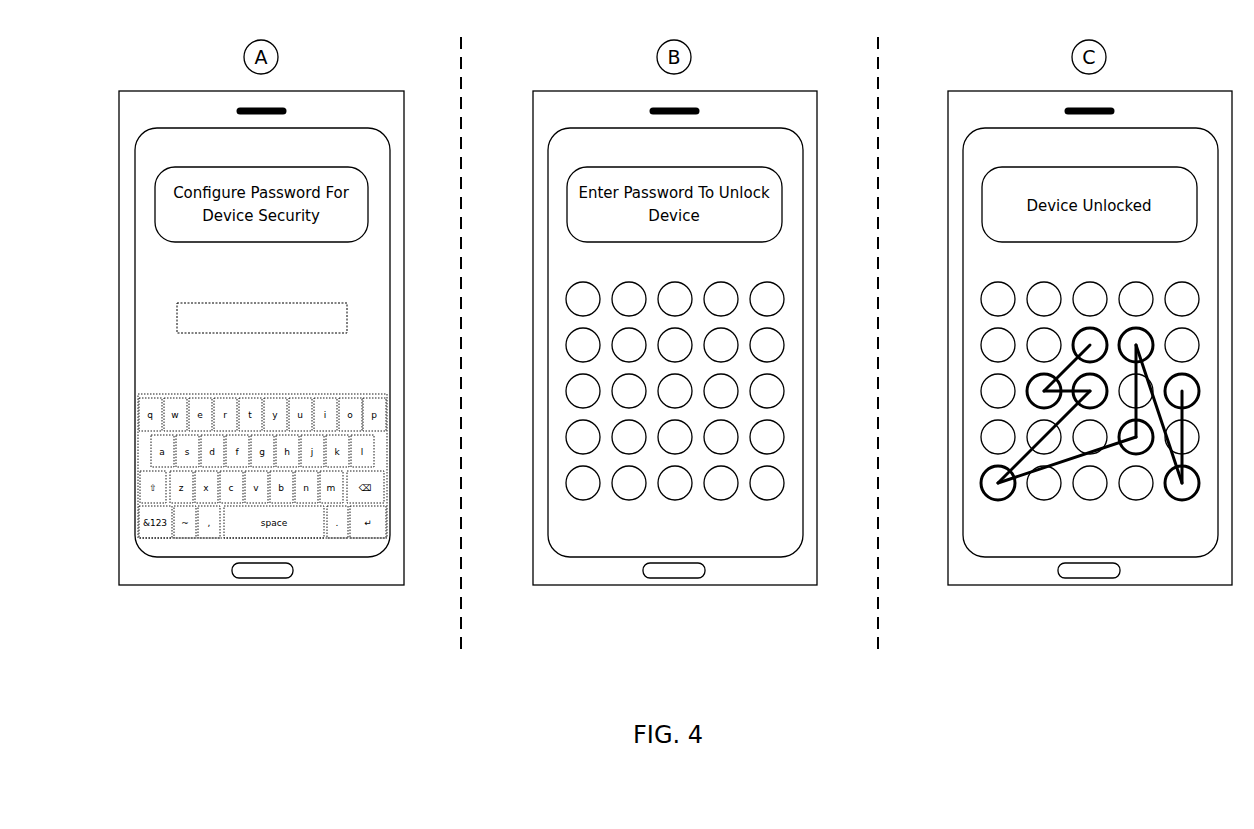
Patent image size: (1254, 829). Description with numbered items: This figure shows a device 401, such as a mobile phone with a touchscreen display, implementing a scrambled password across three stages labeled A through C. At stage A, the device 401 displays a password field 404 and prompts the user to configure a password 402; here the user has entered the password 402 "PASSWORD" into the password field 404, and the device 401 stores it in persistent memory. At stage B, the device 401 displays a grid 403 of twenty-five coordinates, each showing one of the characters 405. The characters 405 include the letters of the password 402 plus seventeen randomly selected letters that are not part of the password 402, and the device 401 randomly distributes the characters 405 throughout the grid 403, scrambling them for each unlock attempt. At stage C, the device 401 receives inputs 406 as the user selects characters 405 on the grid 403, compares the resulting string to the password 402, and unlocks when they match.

The device 401 is at (138, 90).
The password 402 is at (208, 333).
The grid 403 is at (603, 277).
The password field 404 is at (333, 334).
The characters 405 is at (637, 501).
The inputs 406 is at (1025, 498).